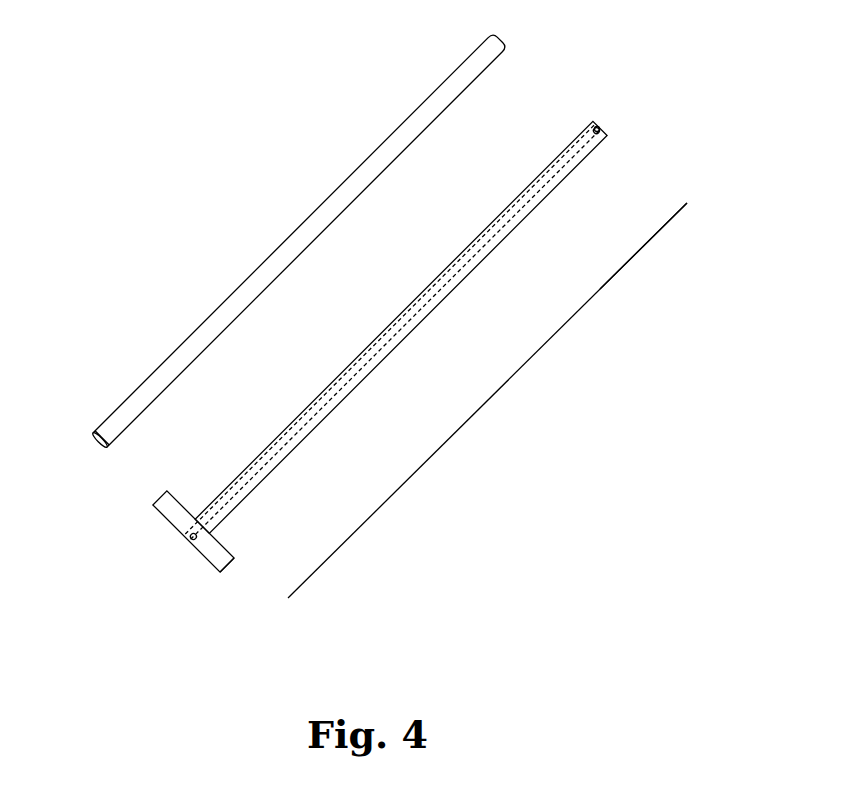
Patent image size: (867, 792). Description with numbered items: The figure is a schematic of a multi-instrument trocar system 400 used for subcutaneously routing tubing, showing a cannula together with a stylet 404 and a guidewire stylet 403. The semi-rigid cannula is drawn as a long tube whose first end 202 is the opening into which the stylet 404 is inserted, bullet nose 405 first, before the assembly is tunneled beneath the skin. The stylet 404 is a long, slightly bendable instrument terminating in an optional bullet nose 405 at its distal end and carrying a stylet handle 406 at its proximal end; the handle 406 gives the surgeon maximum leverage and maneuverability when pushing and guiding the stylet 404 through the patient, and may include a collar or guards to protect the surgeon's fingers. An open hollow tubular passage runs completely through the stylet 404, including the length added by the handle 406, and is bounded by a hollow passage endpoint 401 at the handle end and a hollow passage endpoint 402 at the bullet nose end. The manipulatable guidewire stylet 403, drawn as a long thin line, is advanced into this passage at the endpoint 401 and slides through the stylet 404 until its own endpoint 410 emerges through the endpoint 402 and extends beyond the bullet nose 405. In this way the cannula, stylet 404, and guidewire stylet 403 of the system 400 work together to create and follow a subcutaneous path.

The trocar system 400 is at (108, 238).
The first end 202 is at (92, 447).
The hollow passage endpoint 401 is at (193, 531).
The hollow passage endpoint 402 is at (597, 126).
The guidewire stylet 403 is at (475, 415).
The stylet 404 is at (342, 282).
The bullet nose 405 is at (596, 130).
The stylet handle 406 is at (217, 568).
The endpoint 410 is at (687, 203).